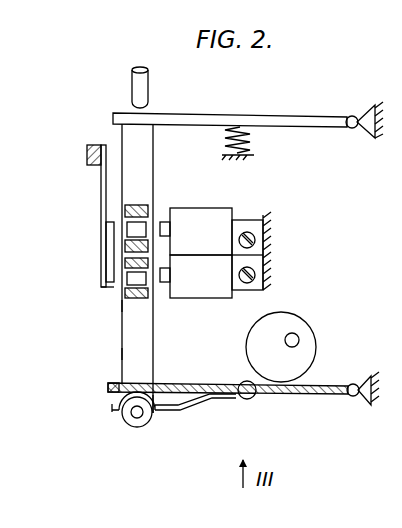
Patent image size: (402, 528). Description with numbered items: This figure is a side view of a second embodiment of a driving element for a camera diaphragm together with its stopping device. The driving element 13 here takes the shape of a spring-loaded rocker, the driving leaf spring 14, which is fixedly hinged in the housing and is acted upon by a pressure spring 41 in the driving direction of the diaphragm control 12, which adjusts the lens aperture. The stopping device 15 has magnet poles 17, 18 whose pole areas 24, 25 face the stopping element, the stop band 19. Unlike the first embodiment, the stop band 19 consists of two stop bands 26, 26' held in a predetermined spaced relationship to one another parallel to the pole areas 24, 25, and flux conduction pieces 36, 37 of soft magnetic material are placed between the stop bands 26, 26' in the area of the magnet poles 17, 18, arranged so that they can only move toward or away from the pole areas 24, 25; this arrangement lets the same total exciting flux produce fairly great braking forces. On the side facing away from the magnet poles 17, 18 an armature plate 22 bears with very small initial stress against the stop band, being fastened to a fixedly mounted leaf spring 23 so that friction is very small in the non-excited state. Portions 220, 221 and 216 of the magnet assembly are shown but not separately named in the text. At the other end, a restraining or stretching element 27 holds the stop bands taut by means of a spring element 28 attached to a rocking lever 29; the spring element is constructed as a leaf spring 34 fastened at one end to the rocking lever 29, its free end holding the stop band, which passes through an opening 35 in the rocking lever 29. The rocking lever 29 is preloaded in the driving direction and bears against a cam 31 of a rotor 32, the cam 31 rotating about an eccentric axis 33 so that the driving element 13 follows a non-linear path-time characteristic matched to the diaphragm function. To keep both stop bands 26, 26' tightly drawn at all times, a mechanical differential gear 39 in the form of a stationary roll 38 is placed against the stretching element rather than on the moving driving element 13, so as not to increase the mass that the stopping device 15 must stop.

The diaphragm control 12 is at (131, 82).
The driving element 13 is at (272, 112).
The driving leaf spring 14 is at (200, 113).
The pressure spring 41 is at (252, 143).
The leaf spring 23 is at (100, 186).
The stopping device 15 is at (102, 239).
The armature plate 22 is at (106, 280).
The stop band 19 is at (120, 325).
The flux conduction piece 36 is at (148, 210).
The pole area 24 is at (148, 226).
The flux conduction piece 37 is at (148, 298).
The pole area 25 is at (148, 283).
The stop band 26 is at (89, 303).
The stop band 26' is at (94, 353).
The switch housing upper part 220 is at (215, 215).
The switch housing lower part 221 is at (214, 293).
The magnet pole 17 is at (168, 232).
The magnet pole 18 is at (168, 272).
The terminal block 216 is at (266, 250).
The rotor 32 is at (303, 356).
The eccentric axis 33 is at (294, 333).
The cam 31 is at (310, 380).
The rocking lever 29 is at (336, 395).
The opening 35 is at (118, 380).
The stationary roll 38 is at (138, 428).
The mechanical differential gear 39 is at (118, 426).
The stretching element 27 is at (108, 406).
The spring element 28 is at (196, 406).
The leaf spring 34 is at (158, 413).